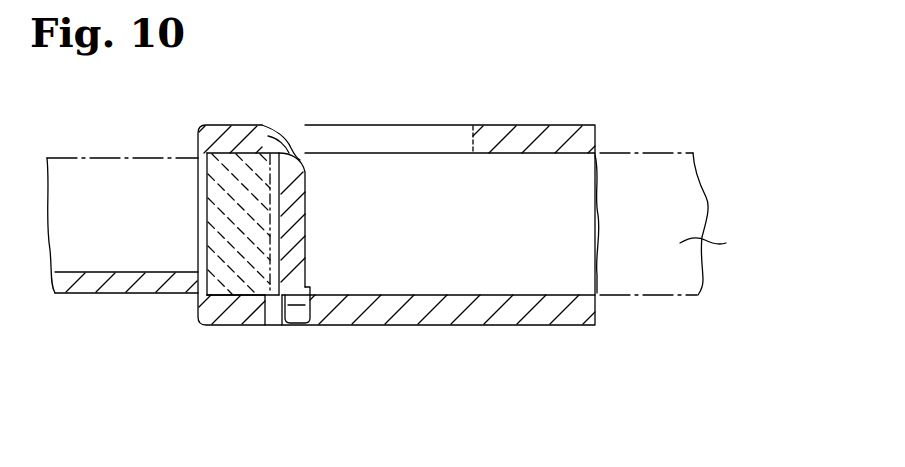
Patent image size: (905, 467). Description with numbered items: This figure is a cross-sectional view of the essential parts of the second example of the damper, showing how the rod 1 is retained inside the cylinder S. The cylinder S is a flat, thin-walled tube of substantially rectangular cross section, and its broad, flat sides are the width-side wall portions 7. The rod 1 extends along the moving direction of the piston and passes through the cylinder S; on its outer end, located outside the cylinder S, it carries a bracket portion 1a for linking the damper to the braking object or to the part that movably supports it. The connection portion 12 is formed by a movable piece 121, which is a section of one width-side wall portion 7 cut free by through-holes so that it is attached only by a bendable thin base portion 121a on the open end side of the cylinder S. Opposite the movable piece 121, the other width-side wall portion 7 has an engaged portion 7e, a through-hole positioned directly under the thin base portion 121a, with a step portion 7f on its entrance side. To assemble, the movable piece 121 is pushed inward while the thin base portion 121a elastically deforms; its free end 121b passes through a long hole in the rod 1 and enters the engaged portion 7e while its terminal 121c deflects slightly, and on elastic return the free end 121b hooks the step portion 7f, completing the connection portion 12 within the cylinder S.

The rod 1 is at (663, 167).
The bracket portion 1a is at (773, 240).
The width-side wall portion 7 is at (582, 124).
The engaged portion 7e is at (273, 327).
The step portion 7f is at (303, 293).
The connection portion 12 is at (297, 200).
The movable piece 121 is at (297, 200).
The thin base portion 121a is at (292, 125).
The free end 121b is at (307, 327).
The terminal 121c is at (317, 383).
The cylinder S is at (558, 125).